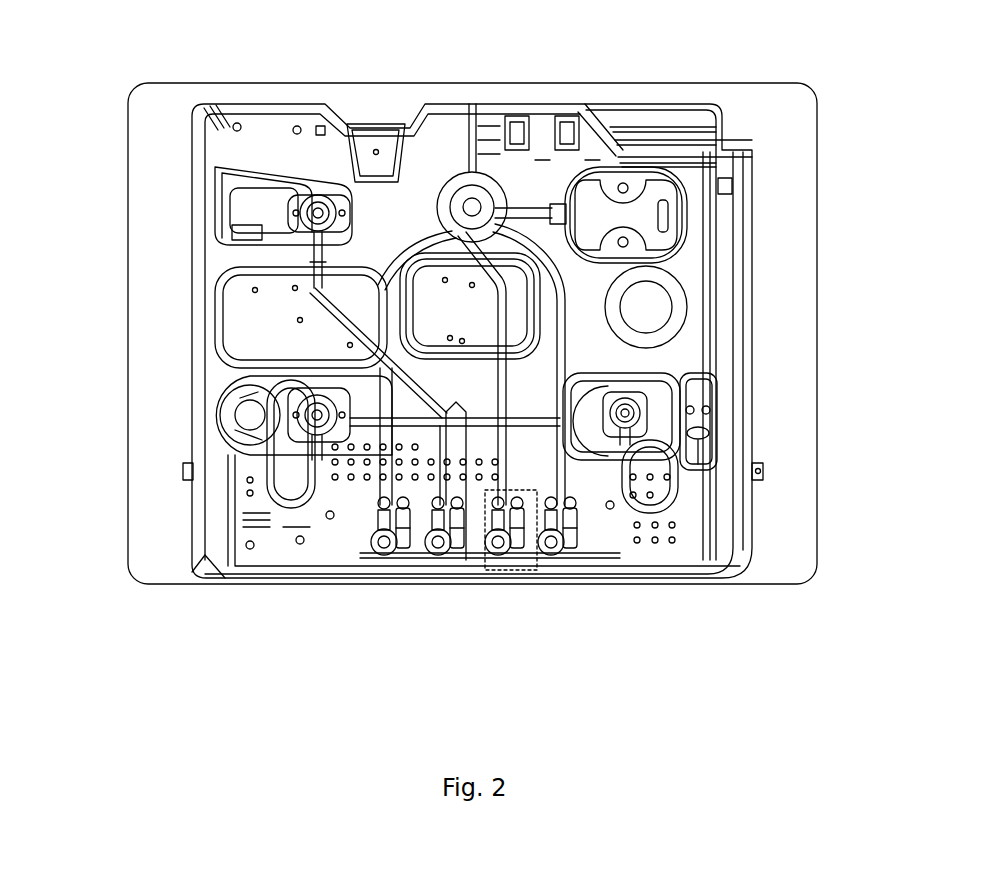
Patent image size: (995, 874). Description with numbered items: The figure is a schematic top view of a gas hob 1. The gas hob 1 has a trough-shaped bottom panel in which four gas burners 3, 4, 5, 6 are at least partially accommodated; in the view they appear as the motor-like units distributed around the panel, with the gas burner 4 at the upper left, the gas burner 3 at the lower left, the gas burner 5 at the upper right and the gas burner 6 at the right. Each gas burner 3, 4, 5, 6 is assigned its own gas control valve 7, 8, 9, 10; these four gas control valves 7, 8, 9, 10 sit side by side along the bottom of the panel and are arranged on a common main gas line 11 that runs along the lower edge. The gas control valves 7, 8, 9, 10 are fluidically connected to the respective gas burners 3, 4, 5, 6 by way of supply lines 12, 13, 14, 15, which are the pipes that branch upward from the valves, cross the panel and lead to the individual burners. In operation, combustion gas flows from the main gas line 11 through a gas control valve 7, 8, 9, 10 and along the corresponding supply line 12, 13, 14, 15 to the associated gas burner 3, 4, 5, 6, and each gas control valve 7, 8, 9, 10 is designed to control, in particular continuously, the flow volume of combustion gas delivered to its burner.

The gas hob 1 is at (150, 150).
The gas burner 3 is at (313, 427).
The gas burner 4 is at (316, 232).
The gas burner 5 is at (672, 188).
The gas burner 6 is at (645, 412).
The gas control valve 7 is at (570, 558).
The gas control valve 8 is at (508, 560).
The gas control valve 9 is at (440, 555).
The gas control valve 10 is at (382, 548).
The main gas line 11 is at (672, 580).
The supply line 12 is at (673, 488).
The supply line 13 is at (505, 380).
The supply line 14 is at (466, 560).
The supply line 15 is at (392, 466).